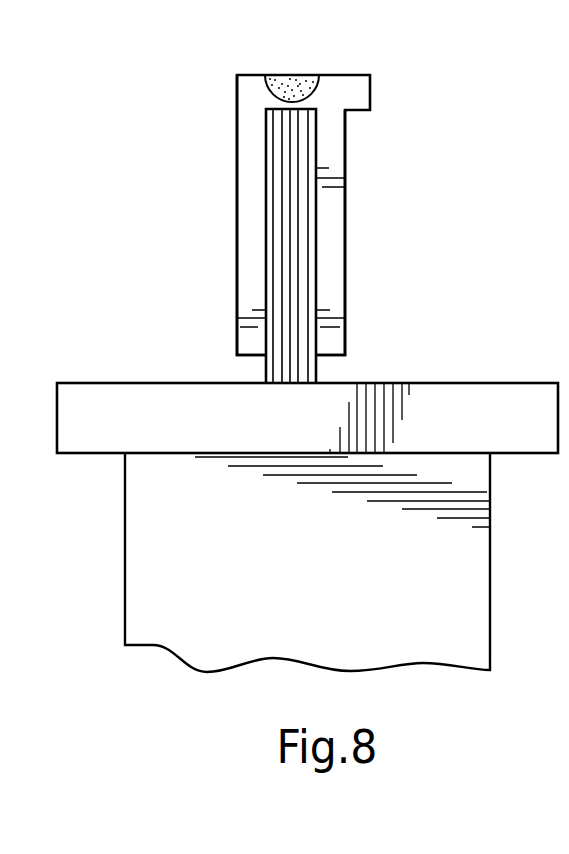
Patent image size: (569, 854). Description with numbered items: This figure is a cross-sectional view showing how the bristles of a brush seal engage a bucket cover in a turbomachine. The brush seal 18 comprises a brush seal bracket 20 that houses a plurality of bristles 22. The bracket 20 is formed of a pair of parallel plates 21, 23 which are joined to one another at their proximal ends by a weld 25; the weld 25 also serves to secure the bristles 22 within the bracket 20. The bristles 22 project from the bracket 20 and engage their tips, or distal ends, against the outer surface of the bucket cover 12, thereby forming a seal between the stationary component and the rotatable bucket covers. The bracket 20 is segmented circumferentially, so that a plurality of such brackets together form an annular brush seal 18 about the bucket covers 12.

The bucket cover 12 is at (102, 383).
The brush seal 18 is at (384, 190).
The brush seal bracket 20 is at (248, 95).
The parallel plate 21 is at (239, 206).
The bristles 22 is at (292, 295).
The parallel plate 23 is at (332, 245).
The weld 25 is at (294, 78).